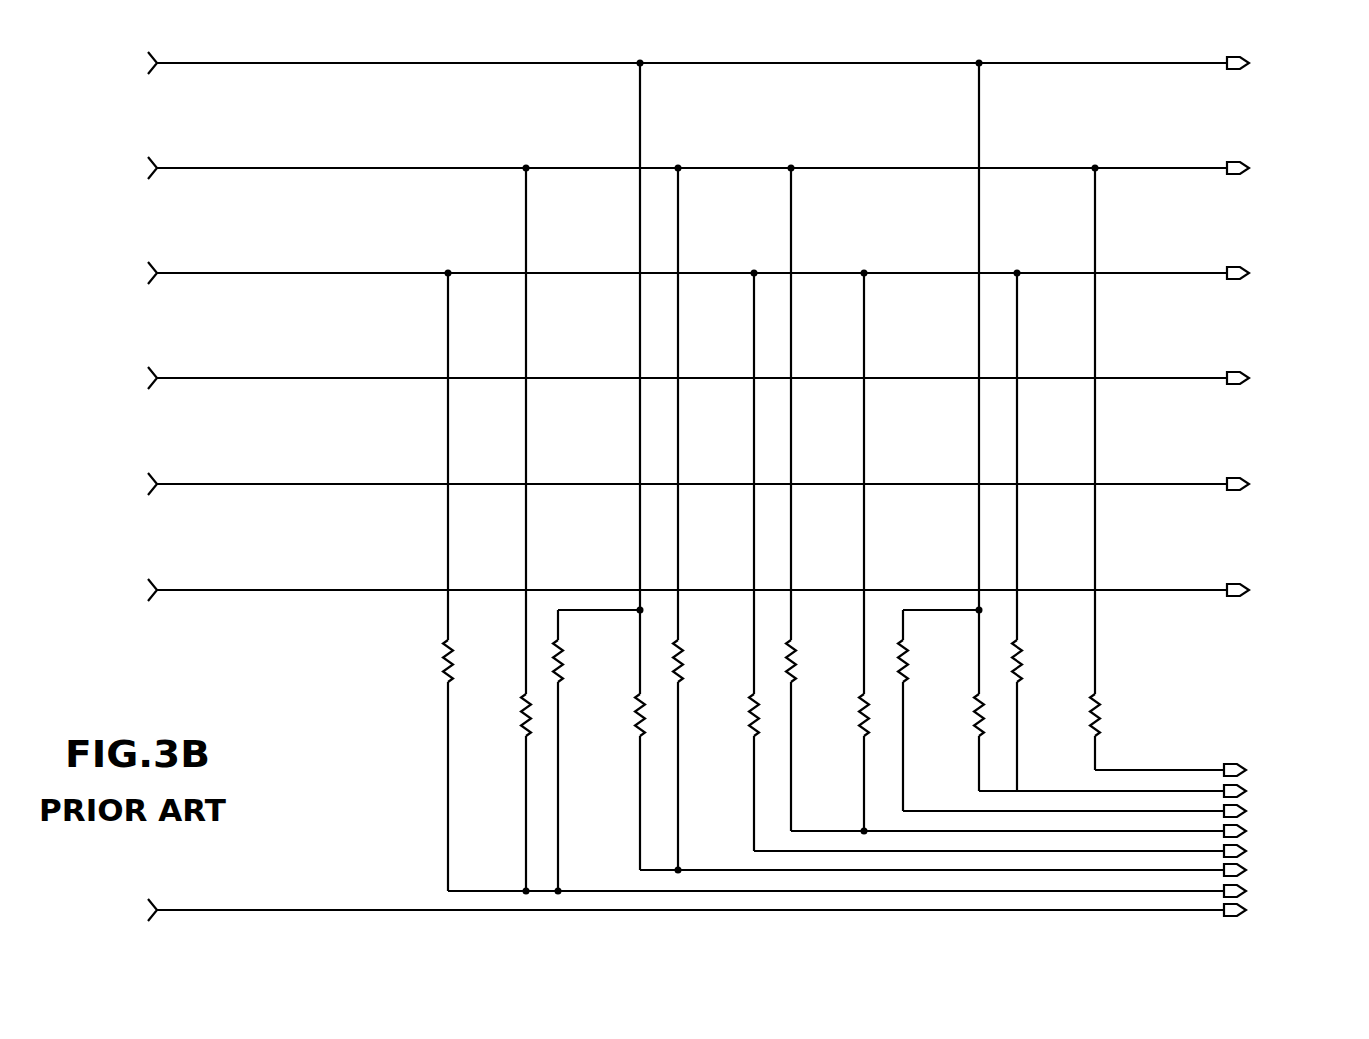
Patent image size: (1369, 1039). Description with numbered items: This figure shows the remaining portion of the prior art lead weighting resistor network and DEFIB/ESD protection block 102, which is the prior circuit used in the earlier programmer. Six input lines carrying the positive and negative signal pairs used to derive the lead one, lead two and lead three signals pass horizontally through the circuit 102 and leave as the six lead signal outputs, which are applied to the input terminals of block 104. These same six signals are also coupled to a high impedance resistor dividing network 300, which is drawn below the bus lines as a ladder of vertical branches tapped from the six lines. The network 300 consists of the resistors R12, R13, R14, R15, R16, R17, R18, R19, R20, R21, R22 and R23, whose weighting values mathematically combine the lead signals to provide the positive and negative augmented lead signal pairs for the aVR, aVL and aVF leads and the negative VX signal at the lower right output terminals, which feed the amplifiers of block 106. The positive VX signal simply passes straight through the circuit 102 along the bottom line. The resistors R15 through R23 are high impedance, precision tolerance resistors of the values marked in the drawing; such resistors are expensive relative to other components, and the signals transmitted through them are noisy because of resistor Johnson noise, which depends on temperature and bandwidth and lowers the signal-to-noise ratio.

The prior lead weighting resistor network and DEFIB/ESD protection block 102 is at (636, 477).
The high impedance resistor dividing network 300 is at (784, 477).
The block 104 is at (1265, 318).
The old circuit (FIG. 4) 106 is at (1255, 831).
The resistor R12 is at (404, 582).
The resistor R13 is at (486, 529).
The resistor R14 is at (598, 750).
The resistor R15 is at (600, 466).
The resistor R16 is at (717, 519).
The resistor R17 is at (713, 562).
The resistor R18 is at (829, 499).
The resistor R19 is at (824, 552).
The resistor R20 is at (942, 710).
The resistor R21 is at (939, 427).
The resistor R22 is at (1056, 532).
The resistor R23 is at (1053, 469).